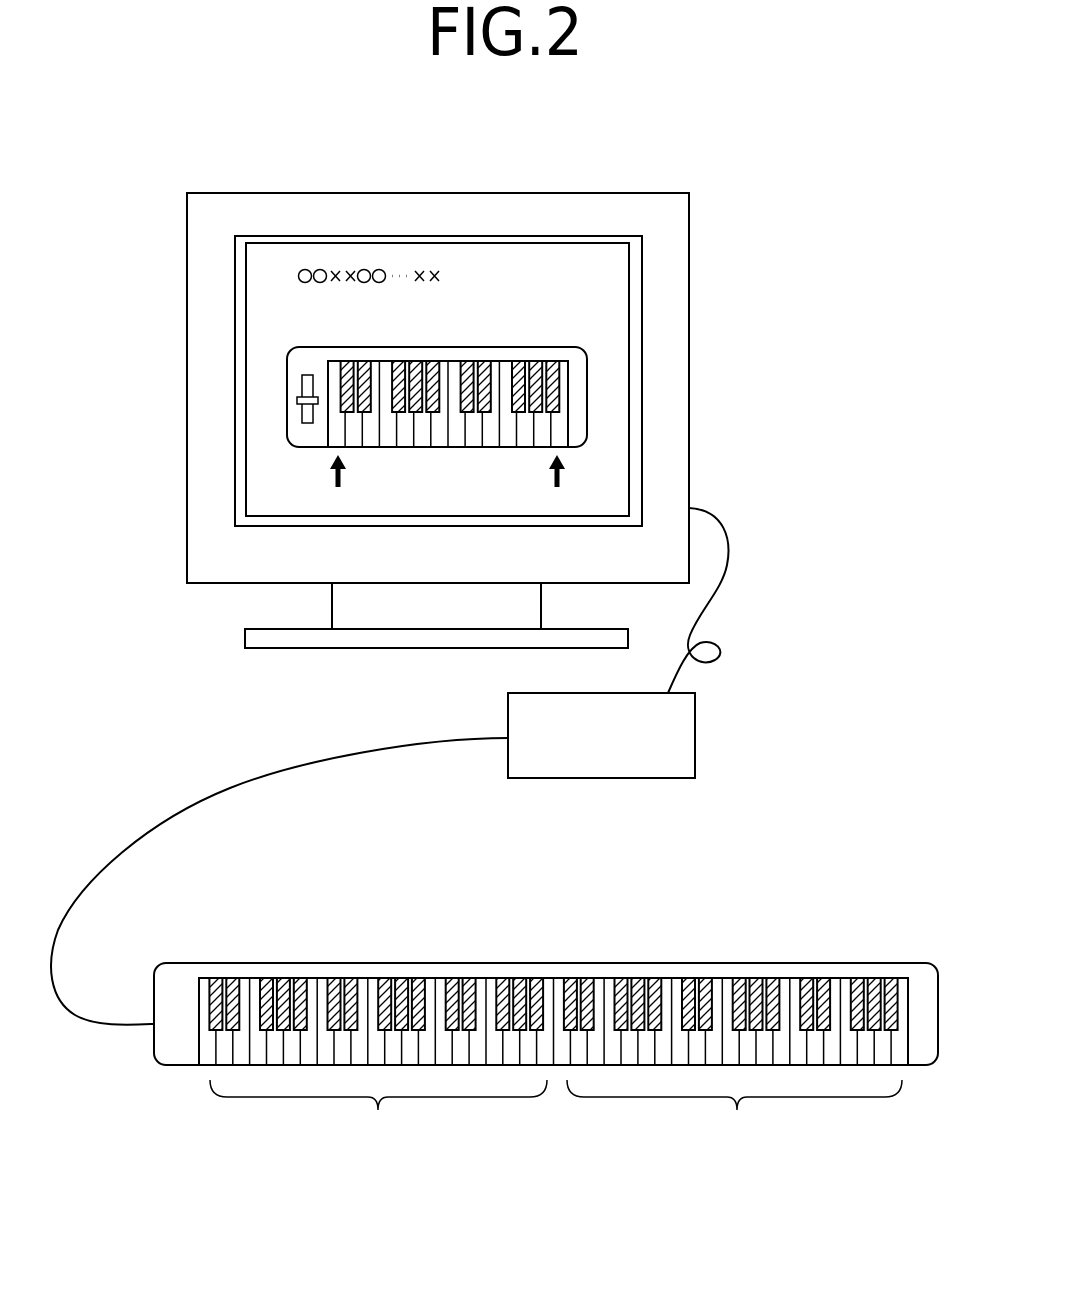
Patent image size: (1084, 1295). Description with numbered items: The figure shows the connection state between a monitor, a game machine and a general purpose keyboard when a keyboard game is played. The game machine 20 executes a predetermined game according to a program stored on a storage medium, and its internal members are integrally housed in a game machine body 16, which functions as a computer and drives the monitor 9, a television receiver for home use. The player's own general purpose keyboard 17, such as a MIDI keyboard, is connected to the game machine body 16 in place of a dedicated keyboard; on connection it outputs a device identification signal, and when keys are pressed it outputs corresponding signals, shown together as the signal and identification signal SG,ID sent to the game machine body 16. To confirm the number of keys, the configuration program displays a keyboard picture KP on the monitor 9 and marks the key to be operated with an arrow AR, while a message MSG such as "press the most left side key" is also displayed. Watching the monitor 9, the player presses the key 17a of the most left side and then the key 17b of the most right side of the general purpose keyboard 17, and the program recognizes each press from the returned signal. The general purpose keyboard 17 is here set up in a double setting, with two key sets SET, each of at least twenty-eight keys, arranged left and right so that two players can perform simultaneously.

The monitor 9 is at (709, 405).
The message MSG is at (295, 264).
The keyboard picture KP is at (498, 346).
The arrow AR is at (560, 474).
The game machine 20 is at (799, 627).
The game machine body 16 is at (588, 779).
The signal and device identification signal SG,ID is at (279, 881).
The general purpose keyboard 17 is at (843, 954).
The key of the most left side 17a is at (204, 1048).
The key of the most right side 17b is at (902, 1048).
The key set SET is at (556, 1113).